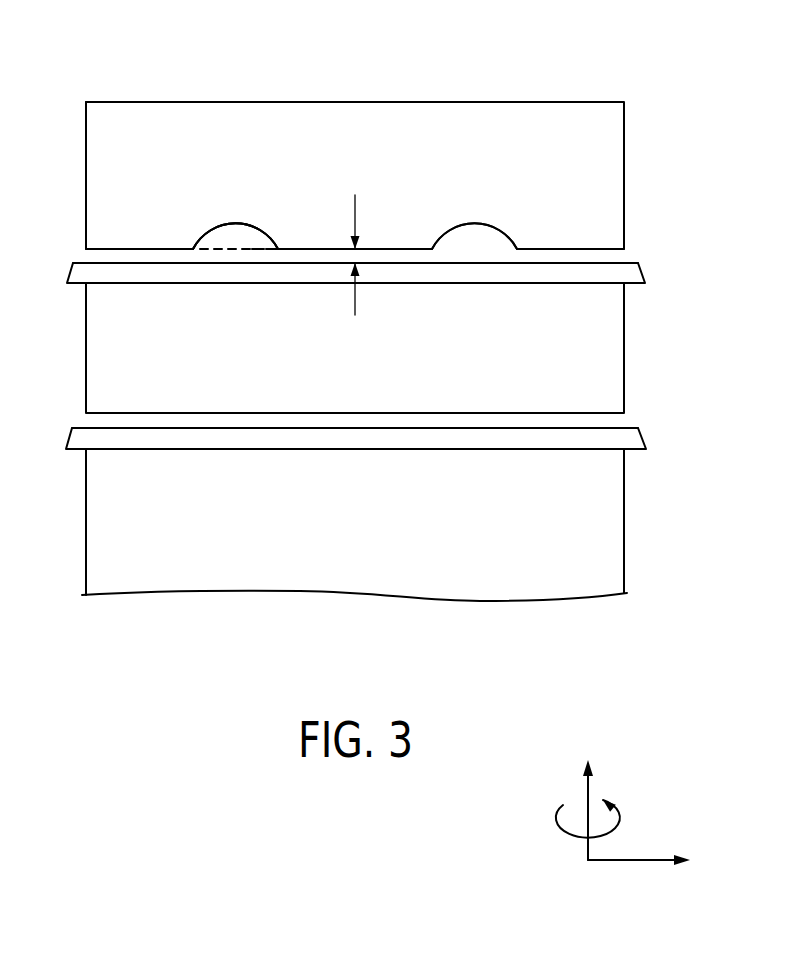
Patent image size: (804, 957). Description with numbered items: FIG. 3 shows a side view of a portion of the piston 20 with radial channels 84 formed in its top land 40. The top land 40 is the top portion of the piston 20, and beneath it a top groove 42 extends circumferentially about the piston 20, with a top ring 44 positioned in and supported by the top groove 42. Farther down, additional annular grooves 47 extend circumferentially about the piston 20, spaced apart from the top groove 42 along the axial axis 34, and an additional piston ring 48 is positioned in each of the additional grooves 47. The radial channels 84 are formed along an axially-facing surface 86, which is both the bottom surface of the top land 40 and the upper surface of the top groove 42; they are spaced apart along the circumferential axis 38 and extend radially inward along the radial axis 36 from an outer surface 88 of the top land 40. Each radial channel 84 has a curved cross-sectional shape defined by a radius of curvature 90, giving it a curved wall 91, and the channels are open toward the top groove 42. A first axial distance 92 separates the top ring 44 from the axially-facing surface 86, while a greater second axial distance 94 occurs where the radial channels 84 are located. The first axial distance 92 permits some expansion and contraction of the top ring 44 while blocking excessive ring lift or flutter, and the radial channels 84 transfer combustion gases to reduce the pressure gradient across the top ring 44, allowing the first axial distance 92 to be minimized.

The piston 20 is at (580, 63).
The top land 40 is at (613, 137).
The top groove 42 is at (620, 257).
The top ring 44 is at (80, 278).
The additional annular grooves 47 is at (92, 421).
The additional piston ring 48 is at (637, 440).
The radial channels 84 is at (235, 248).
The axially-facing surface 86 is at (100, 250).
The outer surface 88 is at (86, 175).
The radius of curvature 90 is at (252, 239).
The curved wall 91 is at (228, 226).
The first axial distance 92 is at (358, 215).
The second axial distance 94 is at (507, 230).
The axial axis 34 is at (587, 792).
The radial axis 36 is at (633, 862).
The circumferential axis 38 is at (622, 828).